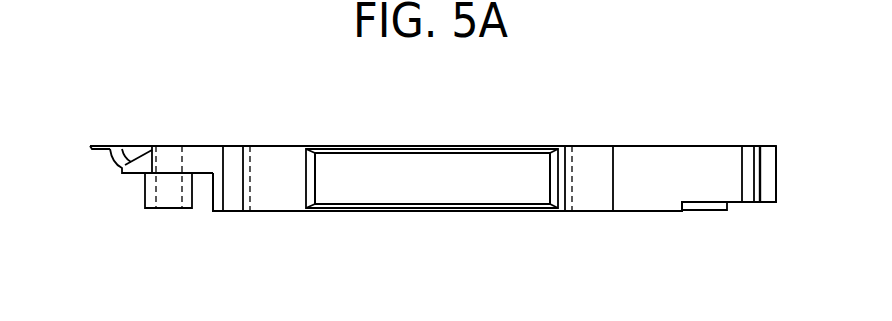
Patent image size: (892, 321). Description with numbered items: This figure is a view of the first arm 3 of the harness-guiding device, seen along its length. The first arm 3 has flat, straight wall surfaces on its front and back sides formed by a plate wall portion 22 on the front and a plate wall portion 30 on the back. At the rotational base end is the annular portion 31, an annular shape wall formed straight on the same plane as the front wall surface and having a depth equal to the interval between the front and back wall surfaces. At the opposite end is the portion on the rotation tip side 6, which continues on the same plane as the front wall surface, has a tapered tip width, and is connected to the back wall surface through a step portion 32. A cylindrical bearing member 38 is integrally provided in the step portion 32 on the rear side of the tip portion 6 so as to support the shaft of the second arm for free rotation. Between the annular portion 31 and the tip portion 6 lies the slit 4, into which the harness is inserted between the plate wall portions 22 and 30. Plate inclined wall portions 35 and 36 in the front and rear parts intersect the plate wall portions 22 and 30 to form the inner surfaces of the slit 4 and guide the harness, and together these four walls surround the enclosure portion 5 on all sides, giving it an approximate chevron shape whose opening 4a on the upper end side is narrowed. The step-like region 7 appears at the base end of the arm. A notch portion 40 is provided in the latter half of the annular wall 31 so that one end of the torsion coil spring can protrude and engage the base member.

The first arm 3 is at (708, 61).
The portion on the rotation tip side 6 is at (193, 146).
The cylindrical bearing member 38 is at (144, 196).
The step portion 32 is at (211, 195).
The plate wall portion 22 is at (393, 147).
The opening on the upper end side 4a is at (448, 168).
The slit 4 is at (432, 178).
The plate inclined wall portion 35 is at (316, 188).
The plate inclined wall portion 36 is at (550, 186).
The plate wall portion 30 is at (407, 213).
The enclosure portion 5 is at (487, 212).
The end portion 7 is at (712, 146).
The annular portion 31 is at (778, 173).
The notch portion 40 is at (690, 207).